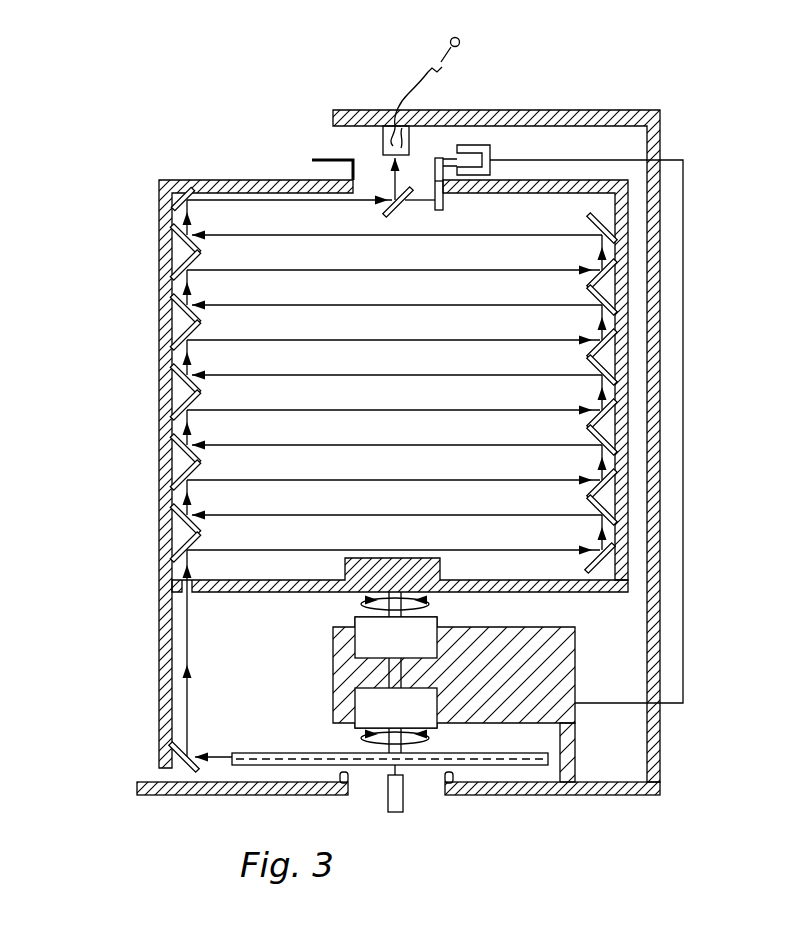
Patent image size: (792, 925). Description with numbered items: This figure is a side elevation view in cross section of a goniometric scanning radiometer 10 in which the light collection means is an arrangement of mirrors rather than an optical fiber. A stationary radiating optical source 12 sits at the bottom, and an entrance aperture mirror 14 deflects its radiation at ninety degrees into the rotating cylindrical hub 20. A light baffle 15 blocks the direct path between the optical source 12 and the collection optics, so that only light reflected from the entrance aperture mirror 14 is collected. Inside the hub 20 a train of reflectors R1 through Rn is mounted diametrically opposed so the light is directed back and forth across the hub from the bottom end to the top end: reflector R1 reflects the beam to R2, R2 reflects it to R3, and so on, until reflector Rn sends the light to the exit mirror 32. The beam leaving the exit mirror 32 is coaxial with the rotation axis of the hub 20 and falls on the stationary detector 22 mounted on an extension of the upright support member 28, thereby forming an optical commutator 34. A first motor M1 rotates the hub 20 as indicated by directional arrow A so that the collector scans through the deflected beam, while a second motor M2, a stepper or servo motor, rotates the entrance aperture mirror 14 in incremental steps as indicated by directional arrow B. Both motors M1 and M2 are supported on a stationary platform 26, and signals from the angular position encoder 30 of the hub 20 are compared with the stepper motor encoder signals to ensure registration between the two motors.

The scanning radiometer 10 is at (701, 111).
The radiating optical source 12 is at (390, 795).
The entrance aperture mirror 14 is at (259, 752).
The light baffle 15 is at (350, 777).
The rotatable cylindrical hub 20 is at (158, 356).
The detector 22 is at (390, 126).
The stationary platform 26 is at (254, 797).
The upright support member 28 is at (685, 348).
The angular position encoder 30 is at (496, 146).
The exit mirror 32 is at (384, 210).
The optical commutator 34 is at (378, 164).
The reflector R1 is at (181, 746).
The reflector R2 is at (174, 537).
The reflector R3 is at (602, 569).
The reflector Rn is at (176, 216).
The directional arrow A is at (428, 606).
The directional arrow B is at (428, 740).
The first motor M1 is at (454, 699).
The second motor M2 is at (396, 708).